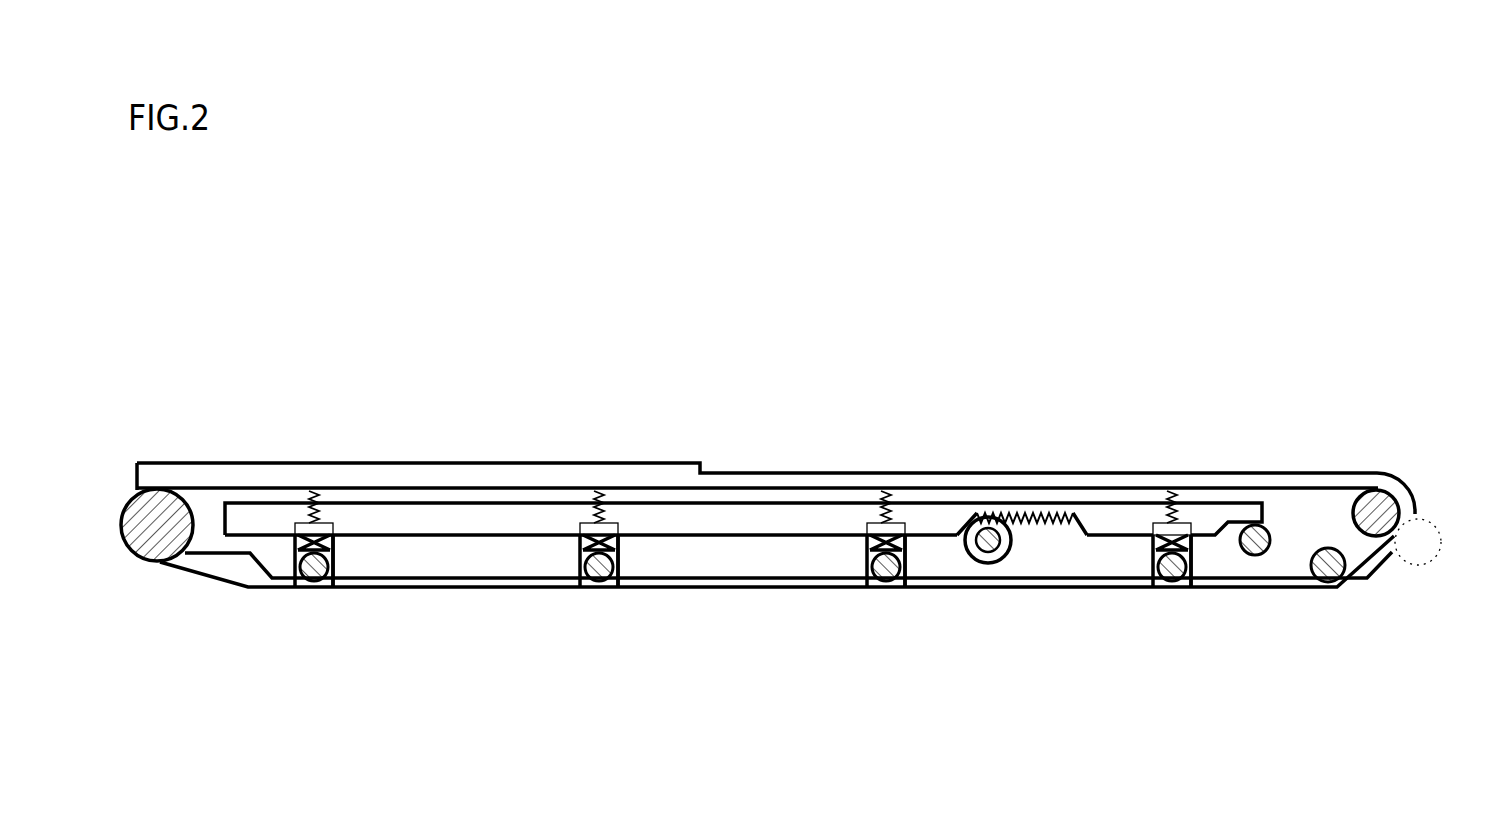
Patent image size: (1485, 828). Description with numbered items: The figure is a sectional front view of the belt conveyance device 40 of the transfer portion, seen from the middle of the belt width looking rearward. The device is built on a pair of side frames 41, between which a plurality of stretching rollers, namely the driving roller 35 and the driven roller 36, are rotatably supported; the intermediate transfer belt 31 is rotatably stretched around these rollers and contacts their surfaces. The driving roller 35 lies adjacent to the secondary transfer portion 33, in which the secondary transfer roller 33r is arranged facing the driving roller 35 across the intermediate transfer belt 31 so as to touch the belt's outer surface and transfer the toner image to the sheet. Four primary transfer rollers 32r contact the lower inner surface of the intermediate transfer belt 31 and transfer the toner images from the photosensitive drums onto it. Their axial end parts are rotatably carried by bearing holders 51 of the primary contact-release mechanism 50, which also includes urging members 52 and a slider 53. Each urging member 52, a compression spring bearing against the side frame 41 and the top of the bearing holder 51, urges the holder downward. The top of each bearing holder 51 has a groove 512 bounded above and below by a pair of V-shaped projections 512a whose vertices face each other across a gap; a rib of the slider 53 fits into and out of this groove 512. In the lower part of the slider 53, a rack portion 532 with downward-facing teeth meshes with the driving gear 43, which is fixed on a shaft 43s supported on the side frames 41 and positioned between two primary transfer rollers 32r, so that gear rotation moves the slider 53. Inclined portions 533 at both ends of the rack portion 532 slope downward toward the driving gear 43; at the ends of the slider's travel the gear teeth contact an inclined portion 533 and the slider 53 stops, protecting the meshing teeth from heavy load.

The belt conveyance device 40 is at (1141, 340).
The side frame 41 is at (757, 472).
The intermediate transfer belt 31 is at (1302, 484).
The driven roller 36 is at (160, 502).
The driving roller 35 is at (1376, 490).
The secondary transfer portion 33 is at (1421, 496).
The secondary transfer roller 33r is at (1412, 568).
The slider 53 is at (1220, 496).
The inclined portion 533 is at (964, 520).
The rack portion 532 is at (1025, 512).
The driving gear 43 is at (993, 562).
The gear shaft 43s is at (1000, 543).
The primary contact-release mechanism 50 is at (740, 559).
The groove 512 is at (293, 543).
The V-shaped projection 512a is at (331, 548).
The primary transfer roller 32r is at (312, 583).
The urging member 52 is at (310, 495).
The bearing holder 51 is at (341, 573).